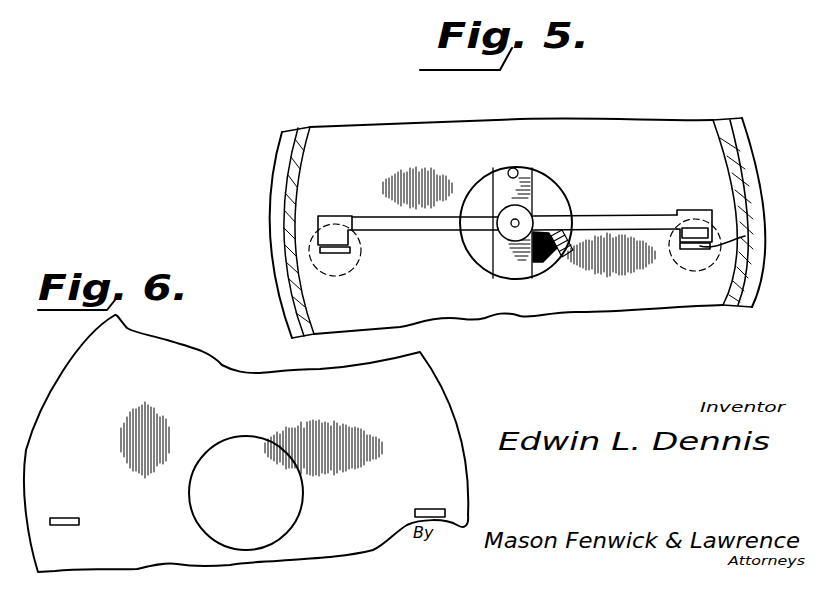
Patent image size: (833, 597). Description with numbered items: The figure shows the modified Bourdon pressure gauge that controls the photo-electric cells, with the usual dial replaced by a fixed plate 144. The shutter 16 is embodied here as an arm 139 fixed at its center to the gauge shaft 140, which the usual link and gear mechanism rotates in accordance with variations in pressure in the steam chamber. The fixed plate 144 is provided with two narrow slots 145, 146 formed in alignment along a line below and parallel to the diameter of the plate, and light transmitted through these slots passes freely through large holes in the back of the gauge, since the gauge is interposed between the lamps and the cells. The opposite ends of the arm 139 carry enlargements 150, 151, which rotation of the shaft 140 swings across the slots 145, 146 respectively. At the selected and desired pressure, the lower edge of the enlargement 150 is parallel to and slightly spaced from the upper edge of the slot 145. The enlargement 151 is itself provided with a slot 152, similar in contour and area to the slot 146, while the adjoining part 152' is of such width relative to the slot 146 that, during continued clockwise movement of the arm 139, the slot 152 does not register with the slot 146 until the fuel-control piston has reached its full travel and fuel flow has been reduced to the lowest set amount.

In FIG. 5, the shutter 16 is at (405, 246).
In FIG. 5, the arm 139 is at (607, 215).
In FIG. 5, the shaft 140 is at (517, 222).
In FIG. 5, the fixed plate 144 is at (441, 135).
In FIG. 6, the fixed plate 144 is at (440, 432).
In FIG. 5, the slot 145 is at (336, 254).
In FIG. 6, the slot 145 is at (73, 518).
In FIG. 5, the slot 146 is at (692, 250).
In FIG. 6, the slot 146 is at (437, 509).
In FIG. 5, the enlargement 150 is at (328, 216).
In FIG. 5, the enlargement 151 is at (688, 212).
In FIG. 5, the slot 152 is at (672, 236).
In FIG. 5, the part 152' is at (751, 235).